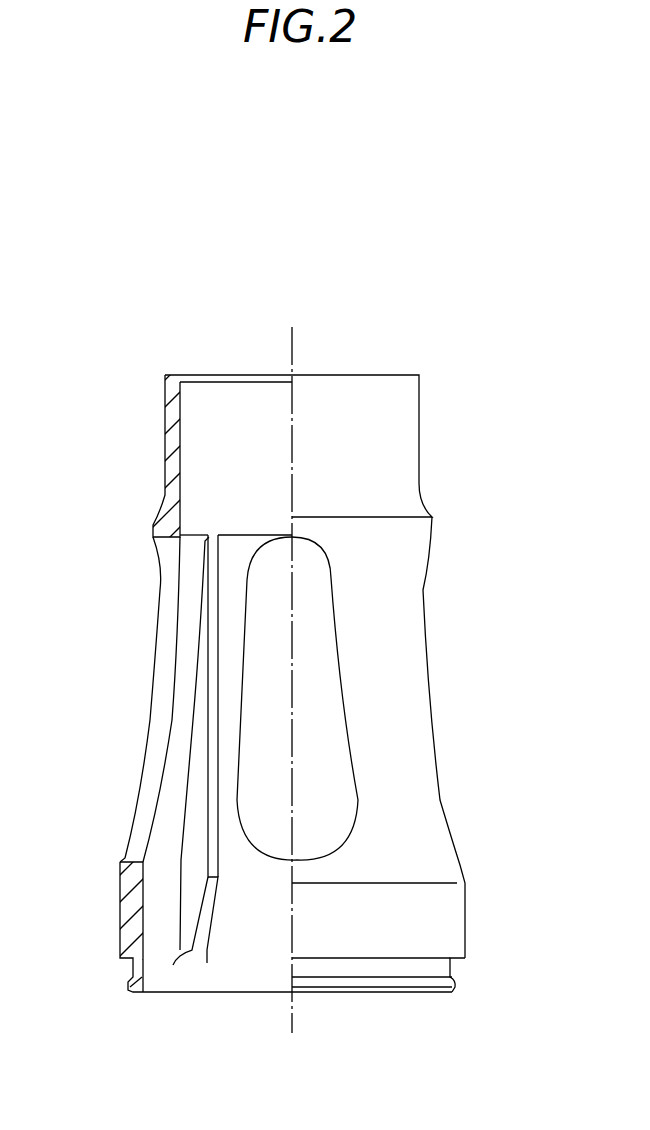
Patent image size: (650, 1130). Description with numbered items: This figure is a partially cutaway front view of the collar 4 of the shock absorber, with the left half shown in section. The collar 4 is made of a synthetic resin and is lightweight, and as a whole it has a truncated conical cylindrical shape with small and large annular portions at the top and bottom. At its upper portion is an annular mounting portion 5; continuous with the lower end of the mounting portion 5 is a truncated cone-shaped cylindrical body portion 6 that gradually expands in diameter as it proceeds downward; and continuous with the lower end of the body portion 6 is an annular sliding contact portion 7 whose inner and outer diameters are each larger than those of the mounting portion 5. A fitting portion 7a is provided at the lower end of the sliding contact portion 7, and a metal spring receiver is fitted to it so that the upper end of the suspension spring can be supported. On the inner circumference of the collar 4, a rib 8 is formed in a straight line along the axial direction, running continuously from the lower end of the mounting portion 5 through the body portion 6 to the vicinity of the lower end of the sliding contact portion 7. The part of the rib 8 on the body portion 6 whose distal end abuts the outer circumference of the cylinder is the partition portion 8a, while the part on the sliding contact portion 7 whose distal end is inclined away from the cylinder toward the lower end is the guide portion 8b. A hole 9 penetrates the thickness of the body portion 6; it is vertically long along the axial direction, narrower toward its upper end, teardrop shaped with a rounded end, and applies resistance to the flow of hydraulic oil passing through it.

The collar 4 is at (442, 392).
The mounting portion 5 is at (165, 437).
The body portion 6 is at (418, 738).
The sliding contact portion 7 is at (112, 930).
The fitting portion 7a is at (458, 985).
The rib 8 is at (150, 800).
The partition portion 8a is at (197, 763).
The guide portion 8b is at (207, 922).
The hole 9 is at (158, 610).